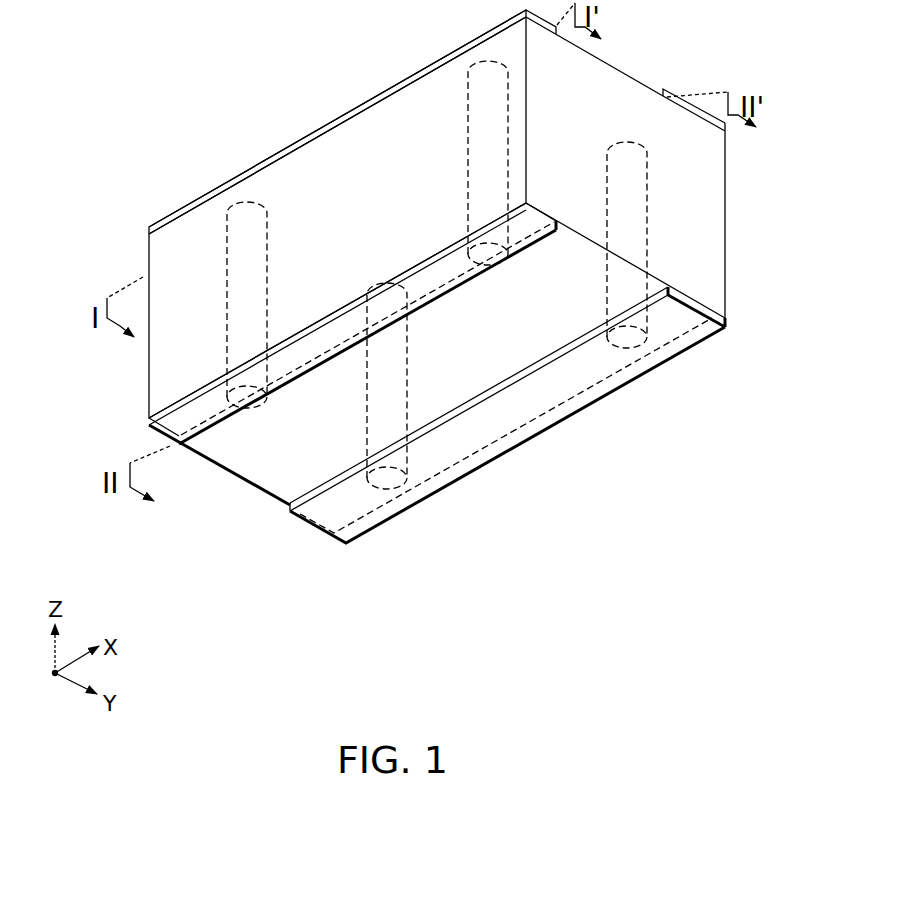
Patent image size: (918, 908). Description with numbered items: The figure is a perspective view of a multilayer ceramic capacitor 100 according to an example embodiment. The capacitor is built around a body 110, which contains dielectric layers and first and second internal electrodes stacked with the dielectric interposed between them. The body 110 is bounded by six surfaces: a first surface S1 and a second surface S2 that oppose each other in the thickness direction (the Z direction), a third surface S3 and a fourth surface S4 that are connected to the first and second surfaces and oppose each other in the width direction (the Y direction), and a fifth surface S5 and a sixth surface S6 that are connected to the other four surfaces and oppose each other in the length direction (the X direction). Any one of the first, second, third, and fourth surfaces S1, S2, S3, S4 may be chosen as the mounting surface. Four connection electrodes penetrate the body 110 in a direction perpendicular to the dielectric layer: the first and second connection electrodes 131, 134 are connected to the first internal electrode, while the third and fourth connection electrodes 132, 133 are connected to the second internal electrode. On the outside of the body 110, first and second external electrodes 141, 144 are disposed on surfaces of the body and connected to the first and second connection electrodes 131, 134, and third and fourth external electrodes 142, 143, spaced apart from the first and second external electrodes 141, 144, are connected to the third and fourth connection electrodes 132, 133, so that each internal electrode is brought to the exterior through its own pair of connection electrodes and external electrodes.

The multilayer ceramic capacitor 100 is at (241, 35).
The body 110 is at (234, 471).
The first connection electrode 131 is at (258, 406).
The third connection electrode 132 is at (387, 478).
The fourth connection electrode 133 is at (628, 340).
The second connection electrode 134 is at (497, 262).
The first external electrode 141 is at (149, 422).
The third external electrode 142 is at (728, 322).
The fourth external electrode 143 is at (728, 127).
The second external electrode 144 is at (149, 227).
The first surface S1 is at (282, 208).
The second surface S2 is at (272, 464).
The third surface S3 is at (228, 238).
The fourth surface S4 is at (681, 332).
The fifth surface S5 is at (219, 437).
The sixth surface S6 is at (607, 122).